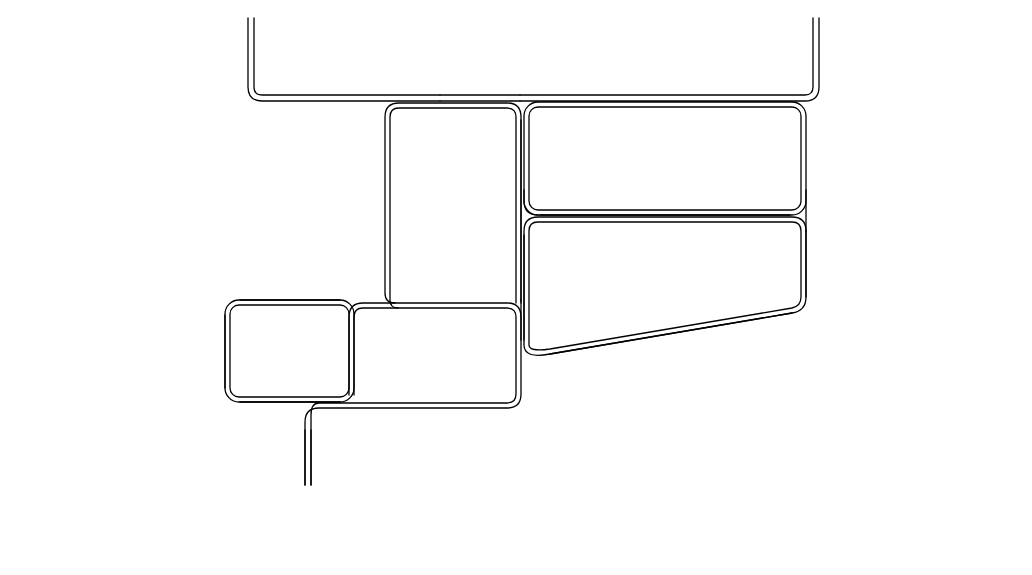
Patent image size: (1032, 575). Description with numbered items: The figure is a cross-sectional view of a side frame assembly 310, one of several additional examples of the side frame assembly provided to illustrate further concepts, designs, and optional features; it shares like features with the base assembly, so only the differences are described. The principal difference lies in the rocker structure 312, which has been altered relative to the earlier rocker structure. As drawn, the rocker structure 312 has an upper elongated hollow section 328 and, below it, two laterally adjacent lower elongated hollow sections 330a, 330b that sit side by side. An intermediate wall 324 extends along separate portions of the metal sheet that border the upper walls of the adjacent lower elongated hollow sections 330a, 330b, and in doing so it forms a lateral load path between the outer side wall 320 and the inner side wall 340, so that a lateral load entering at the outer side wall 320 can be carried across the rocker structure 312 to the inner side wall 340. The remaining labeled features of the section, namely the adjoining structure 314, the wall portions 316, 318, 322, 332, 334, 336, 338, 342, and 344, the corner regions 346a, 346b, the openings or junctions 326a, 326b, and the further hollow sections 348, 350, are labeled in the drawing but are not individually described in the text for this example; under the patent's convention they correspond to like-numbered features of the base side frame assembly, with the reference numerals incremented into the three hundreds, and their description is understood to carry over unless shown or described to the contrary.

The side frame assembly 310 is at (163, 47).
The rocker structure 312 is at (437, 425).
The second channel portion 314 is at (687, 355).
The upper channel wall 316 is at (452, 100).
The bottom wall 318 is at (265, 402).
The outer side wall 320 is at (225, 345).
The divider wall 322 is at (517, 233).
The intermediate wall 324 is at (263, 300).
The first opening 326a is at (522, 327).
The second opening 326b is at (312, 430).
The upper elongated hollow section 328 is at (469, 210).
The lower elongated hollow section 330a is at (318, 362).
The lower elongated hollow section 330b is at (448, 362).
The upper channel 332 is at (265, 193).
The upper channel left wall 334 is at (317, 95).
The channel wall 336 is at (662, 100).
The inclined wall 338 is at (766, 318).
The inner side wall 340 is at (527, 277).
The outer wall 342 is at (812, 262).
The partition wall 344 is at (672, 215).
The first corner 346a is at (543, 213).
The second corner 346b is at (813, 206).
The upper passage 348 is at (755, 177).
The lower passage 350 is at (756, 277).